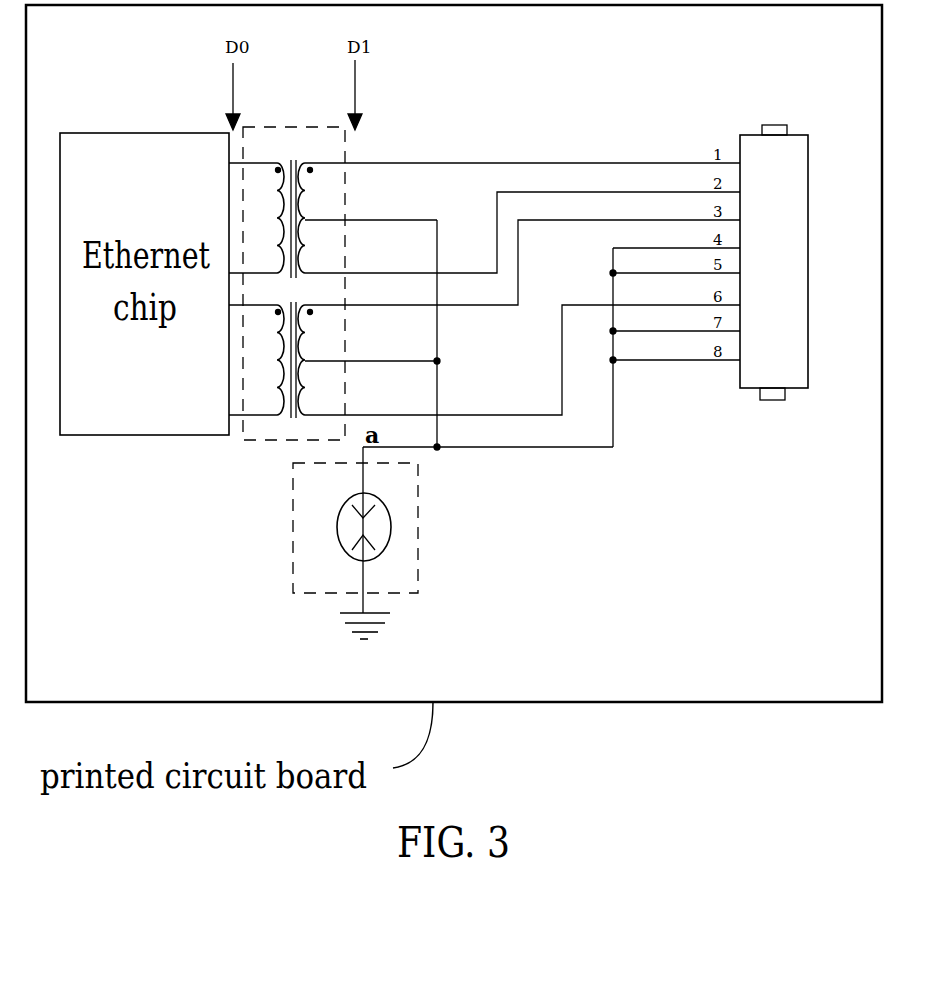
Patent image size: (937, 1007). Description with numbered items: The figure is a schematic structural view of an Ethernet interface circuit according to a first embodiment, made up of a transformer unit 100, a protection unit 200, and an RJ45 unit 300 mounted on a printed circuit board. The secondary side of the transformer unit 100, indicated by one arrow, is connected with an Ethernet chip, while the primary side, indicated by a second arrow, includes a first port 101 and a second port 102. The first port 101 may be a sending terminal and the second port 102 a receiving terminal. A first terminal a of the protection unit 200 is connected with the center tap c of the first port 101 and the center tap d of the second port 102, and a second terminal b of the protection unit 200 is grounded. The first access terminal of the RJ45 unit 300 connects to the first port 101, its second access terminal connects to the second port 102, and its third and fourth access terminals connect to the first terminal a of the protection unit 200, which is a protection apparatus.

The transformer unit 100 is at (288, 123).
The first port 101 is at (340, 202).
The second port 102 is at (332, 338).
The protection unit 200 is at (292, 535).
The RJ45 unit 300 is at (808, 312).